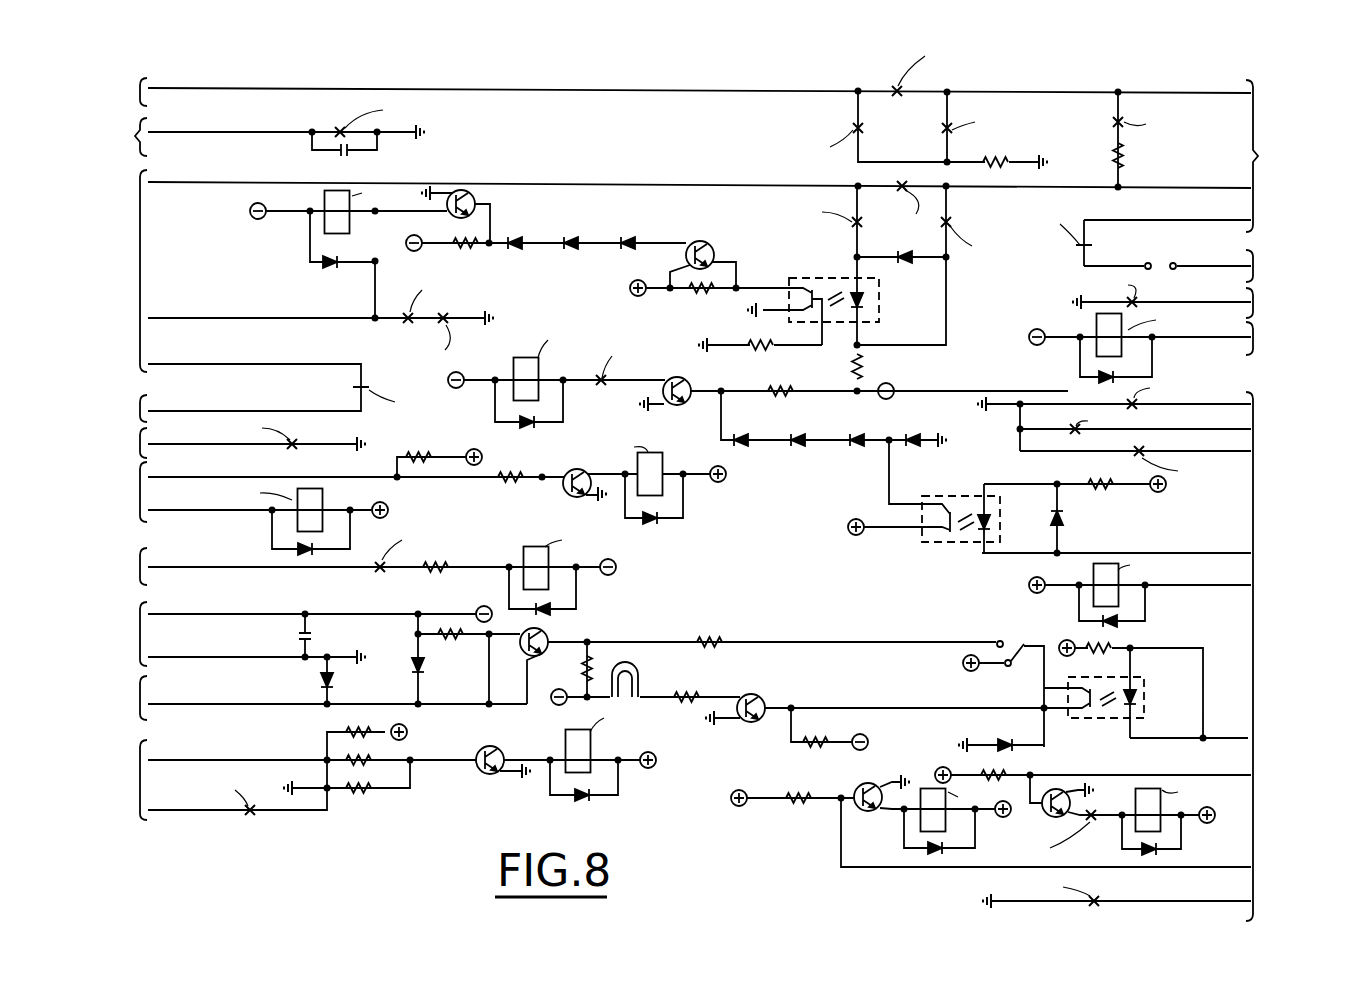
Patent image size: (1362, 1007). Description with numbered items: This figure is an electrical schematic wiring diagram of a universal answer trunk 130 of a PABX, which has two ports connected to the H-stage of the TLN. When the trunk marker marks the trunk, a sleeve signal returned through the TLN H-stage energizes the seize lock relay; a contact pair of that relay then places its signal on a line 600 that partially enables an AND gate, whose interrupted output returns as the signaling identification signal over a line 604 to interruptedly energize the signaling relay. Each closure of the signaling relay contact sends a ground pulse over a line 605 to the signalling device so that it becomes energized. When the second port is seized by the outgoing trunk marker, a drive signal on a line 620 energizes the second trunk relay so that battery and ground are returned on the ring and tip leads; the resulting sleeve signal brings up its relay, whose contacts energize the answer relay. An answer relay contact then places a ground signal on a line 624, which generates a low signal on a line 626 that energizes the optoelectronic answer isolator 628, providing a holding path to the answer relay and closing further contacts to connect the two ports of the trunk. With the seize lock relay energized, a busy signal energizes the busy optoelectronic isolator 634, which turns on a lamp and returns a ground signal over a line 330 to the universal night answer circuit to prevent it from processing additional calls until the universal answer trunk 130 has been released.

The universal answer trunk 130 is at (700, 46).
The line 605 is at (238, 136).
The line 330 is at (200, 706).
The line 620 is at (205, 760).
The line 624 is at (1196, 400).
The line 626 is at (1150, 552).
The optoelectronic answer isolator 628 is at (928, 544).
The line 604 is at (1183, 590).
The busy optoelectronic isolator 634 is at (1144, 682).
The line 600 is at (1180, 900).